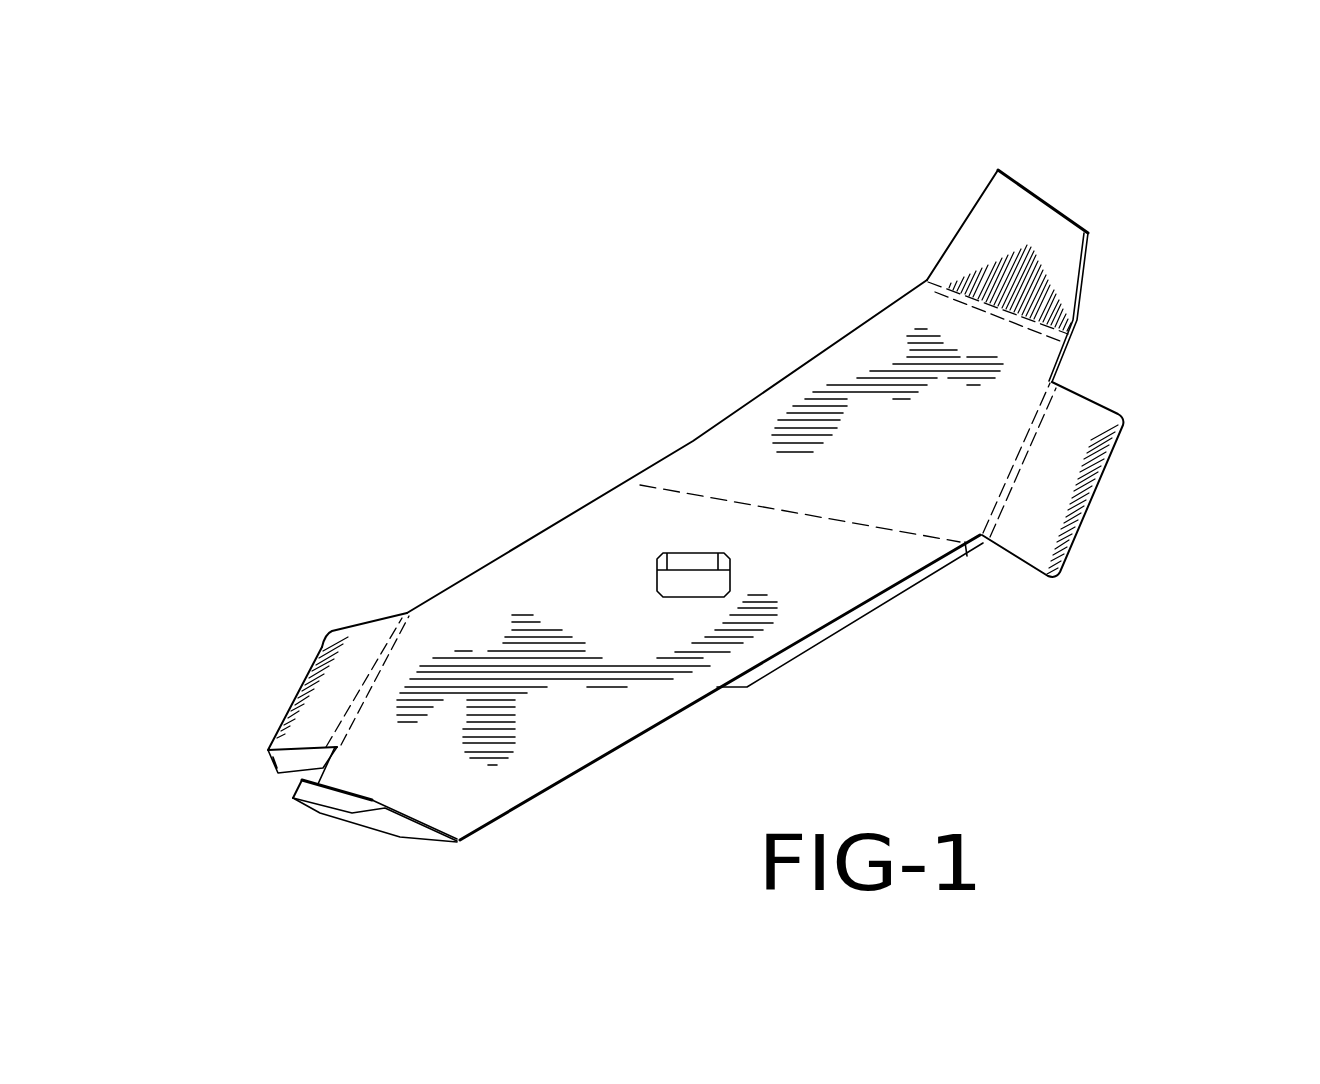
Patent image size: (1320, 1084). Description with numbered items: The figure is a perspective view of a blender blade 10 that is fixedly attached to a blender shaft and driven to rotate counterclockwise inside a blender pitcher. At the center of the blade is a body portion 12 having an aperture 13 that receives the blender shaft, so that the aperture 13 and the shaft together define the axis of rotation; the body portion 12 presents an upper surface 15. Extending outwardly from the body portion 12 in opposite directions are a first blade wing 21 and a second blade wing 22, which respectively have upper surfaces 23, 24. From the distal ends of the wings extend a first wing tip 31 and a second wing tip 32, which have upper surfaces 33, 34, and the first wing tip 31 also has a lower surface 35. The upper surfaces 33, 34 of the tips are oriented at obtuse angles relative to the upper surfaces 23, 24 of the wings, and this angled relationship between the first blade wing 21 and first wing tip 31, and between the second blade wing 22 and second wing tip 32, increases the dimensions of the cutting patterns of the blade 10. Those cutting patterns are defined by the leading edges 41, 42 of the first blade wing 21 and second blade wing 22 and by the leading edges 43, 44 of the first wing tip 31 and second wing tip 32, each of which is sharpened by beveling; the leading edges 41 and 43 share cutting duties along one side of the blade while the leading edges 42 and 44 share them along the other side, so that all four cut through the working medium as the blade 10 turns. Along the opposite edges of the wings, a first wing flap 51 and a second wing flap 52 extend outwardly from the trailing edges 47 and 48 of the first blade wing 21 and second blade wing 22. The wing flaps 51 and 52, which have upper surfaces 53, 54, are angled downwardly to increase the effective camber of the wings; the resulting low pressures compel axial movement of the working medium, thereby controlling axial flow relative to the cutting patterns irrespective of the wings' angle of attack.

The blender blade 10 is at (513, 357).
The body portion 12 is at (453, 593).
The aperture 13 is at (693, 578).
The upper surface 15 is at (803, 598).
The first blade wing 21 is at (533, 730).
The second blade wing 22 is at (797, 378).
The upper surface 23 is at (637, 698).
The upper surface 24 is at (847, 363).
The first wing tip 31 is at (312, 815).
The second wing tip 32 is at (960, 235).
The upper surface 33 is at (367, 798).
The upper surface 34 is at (1048, 232).
The lower surface 35 is at (350, 823).
The leading edge 41 is at (603, 758).
The leading edge 42 is at (713, 425).
The leading edge 43 is at (402, 828).
The leading edge 44 is at (982, 188).
The trailing edge 47 is at (323, 773).
The trailing edge 48 is at (1067, 358).
The first wing flap 51 is at (322, 647).
The second wing flap 52 is at (1125, 462).
The upper surface 53 is at (318, 702).
The upper surface 54 is at (1045, 517).